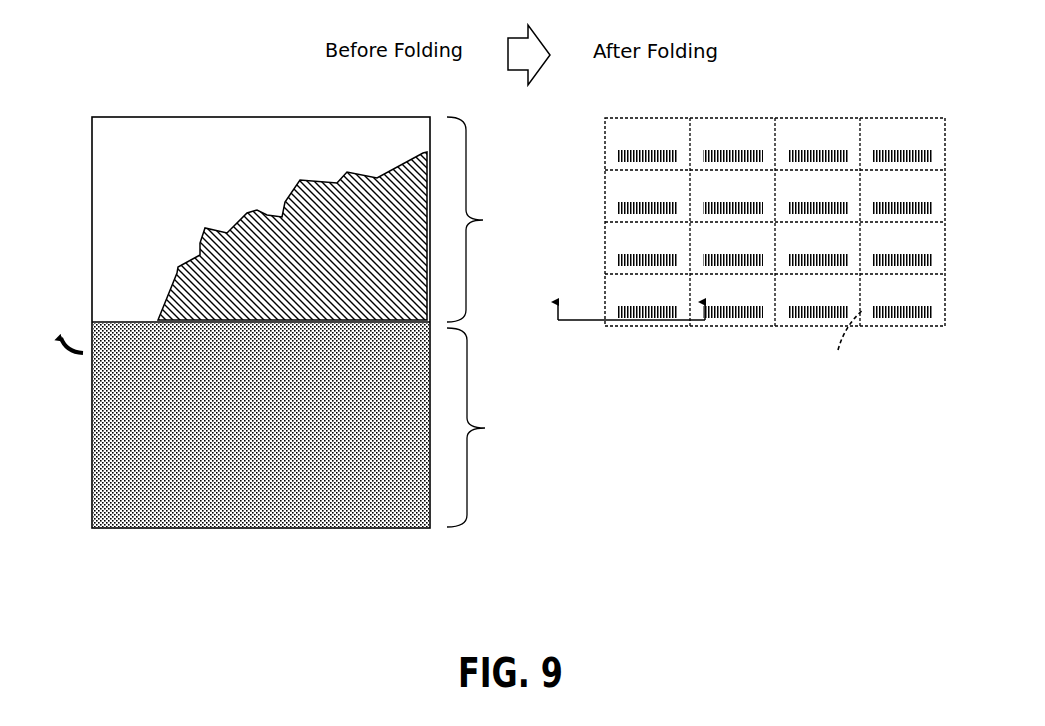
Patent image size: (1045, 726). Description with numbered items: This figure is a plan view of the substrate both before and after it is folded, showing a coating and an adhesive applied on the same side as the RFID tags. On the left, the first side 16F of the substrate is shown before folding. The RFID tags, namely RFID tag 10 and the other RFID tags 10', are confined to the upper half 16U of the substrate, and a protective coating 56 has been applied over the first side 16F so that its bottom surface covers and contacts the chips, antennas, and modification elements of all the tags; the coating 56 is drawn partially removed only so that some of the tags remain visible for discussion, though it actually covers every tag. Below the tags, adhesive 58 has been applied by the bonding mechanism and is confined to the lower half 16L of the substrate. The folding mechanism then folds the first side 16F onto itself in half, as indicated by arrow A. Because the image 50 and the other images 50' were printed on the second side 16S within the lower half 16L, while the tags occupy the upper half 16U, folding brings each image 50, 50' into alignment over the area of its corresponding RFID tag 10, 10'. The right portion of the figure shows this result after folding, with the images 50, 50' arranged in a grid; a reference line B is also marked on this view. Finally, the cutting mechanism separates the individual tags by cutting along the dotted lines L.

The second side of substrate 16S is at (254, 119).
The upper half of substrate 16U is at (489, 219).
The lower half of substrate 16L is at (488, 427).
The first side of substrate 16F is at (789, 120).
The protective coating 56 is at (337, 196).
The adhesive 58 is at (335, 492).
The RFID tag 10 is at (91, 291).
The other RFID tags 10' is at (220, 194).
The image 50 is at (619, 292).
The other images 50' is at (621, 186).
The arrow A is at (61, 364).
The section line B- B is at (628, 327).
The dotted lines L is at (841, 340).